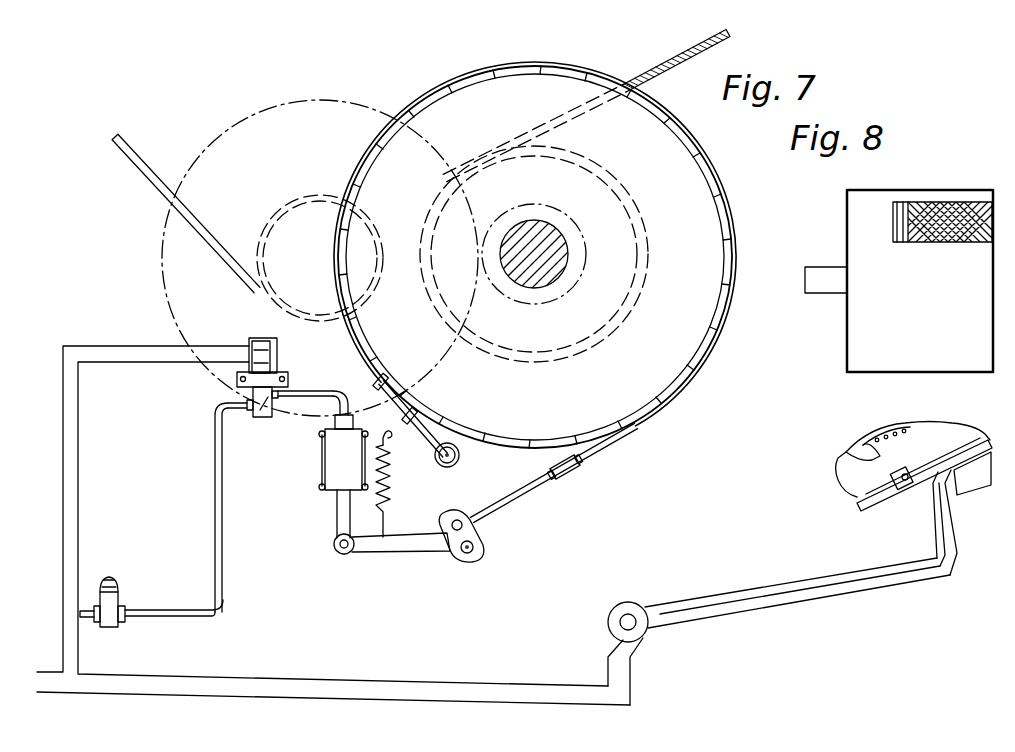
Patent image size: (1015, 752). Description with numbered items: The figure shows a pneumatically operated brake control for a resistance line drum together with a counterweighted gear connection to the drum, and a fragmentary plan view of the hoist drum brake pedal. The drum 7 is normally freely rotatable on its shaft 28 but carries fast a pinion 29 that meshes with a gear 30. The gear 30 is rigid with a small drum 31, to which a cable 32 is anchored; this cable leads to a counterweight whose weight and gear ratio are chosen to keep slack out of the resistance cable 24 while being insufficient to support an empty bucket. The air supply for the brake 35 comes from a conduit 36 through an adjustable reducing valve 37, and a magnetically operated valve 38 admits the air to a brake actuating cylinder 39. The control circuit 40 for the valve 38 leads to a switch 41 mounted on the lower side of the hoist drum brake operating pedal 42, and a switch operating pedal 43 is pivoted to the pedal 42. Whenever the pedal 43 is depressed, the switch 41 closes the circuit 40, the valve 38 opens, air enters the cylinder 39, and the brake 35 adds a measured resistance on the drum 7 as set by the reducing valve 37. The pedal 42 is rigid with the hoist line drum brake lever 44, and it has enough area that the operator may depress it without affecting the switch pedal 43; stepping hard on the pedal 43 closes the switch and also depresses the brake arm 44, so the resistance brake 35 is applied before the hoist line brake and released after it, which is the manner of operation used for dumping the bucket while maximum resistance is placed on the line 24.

In FIG. 7, the drum 7 is at (642, 262).
In FIG. 7, the resistance cable 24 is at (638, 82).
In FIG. 7, the shaft 28 is at (560, 275).
In FIG. 7, the pinion 29 is at (540, 300).
In FIG. 7, the gear 30 is at (232, 118).
In FIG. 7, the small drum 31 is at (278, 212).
In FIG. 7, the cable 32 is at (162, 176).
In FIG. 7, the brake 35 is at (612, 448).
In FIG. 7, the conduit 36 is at (95, 618).
In FIG. 7, the adjustable reducing valve 37 is at (122, 602).
In FIG. 7, the magnetically operated valve 38 is at (268, 404).
In FIG. 7, the brake actuating cylinder 39 is at (330, 468).
In FIG. 7, the control circuit 40 is at (122, 346).
In FIG. 7, the switch 41 is at (975, 478).
In FIG. 7, the hoist drum brake operating pedal 42 is at (905, 507).
In FIG. 8, the hoist drum brake operating pedal 42 is at (920, 281).
In FIG. 7, the switch operating pedal 43 is at (985, 432).
In FIG. 8, the switch operating pedal 43 is at (940, 244).
In FIG. 7, the hoist line drum brake lever 44 is at (705, 600).
In FIG. 8, the hoist line drum brake lever 44 is at (802, 282).